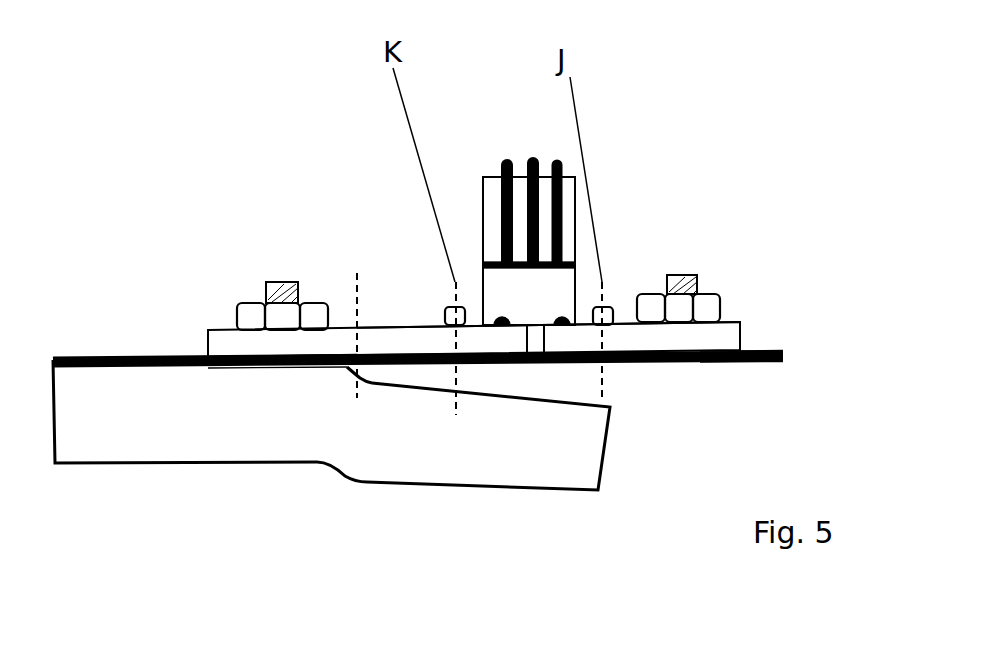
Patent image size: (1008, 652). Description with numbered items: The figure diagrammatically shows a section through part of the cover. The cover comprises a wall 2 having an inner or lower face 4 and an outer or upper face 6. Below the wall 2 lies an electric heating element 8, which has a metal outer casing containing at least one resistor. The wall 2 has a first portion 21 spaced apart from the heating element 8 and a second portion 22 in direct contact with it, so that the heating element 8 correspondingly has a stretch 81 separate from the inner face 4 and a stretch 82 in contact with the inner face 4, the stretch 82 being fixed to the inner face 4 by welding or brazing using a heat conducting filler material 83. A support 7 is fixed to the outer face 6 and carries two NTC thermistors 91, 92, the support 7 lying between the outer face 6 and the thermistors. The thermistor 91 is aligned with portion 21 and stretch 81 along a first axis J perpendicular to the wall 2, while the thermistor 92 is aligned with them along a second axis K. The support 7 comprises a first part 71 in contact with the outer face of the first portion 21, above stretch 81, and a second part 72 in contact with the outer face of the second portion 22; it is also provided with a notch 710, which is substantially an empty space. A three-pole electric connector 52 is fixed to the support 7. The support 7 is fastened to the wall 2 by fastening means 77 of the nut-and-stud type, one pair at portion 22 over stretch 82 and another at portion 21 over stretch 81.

The wall 2 is at (785, 348).
The inner face 4 is at (762, 353).
The outer face 6 is at (763, 348).
The support 7 is at (208, 330).
The heating element 8 is at (331, 467).
The first portion 21 is at (497, 363).
The second portion 22 is at (290, 368).
The electric connector 52 is at (546, 300).
The first part 71 is at (415, 335).
The second part 72 is at (343, 340).
The fastening means 77 is at (264, 273).
The stretch 81 is at (440, 462).
The stretch 82 is at (220, 438).
The filler material 83 is at (356, 367).
The NTC thermistor 91 is at (607, 307).
The NTC thermistor 92 is at (455, 305).
The notch 710 is at (543, 365).